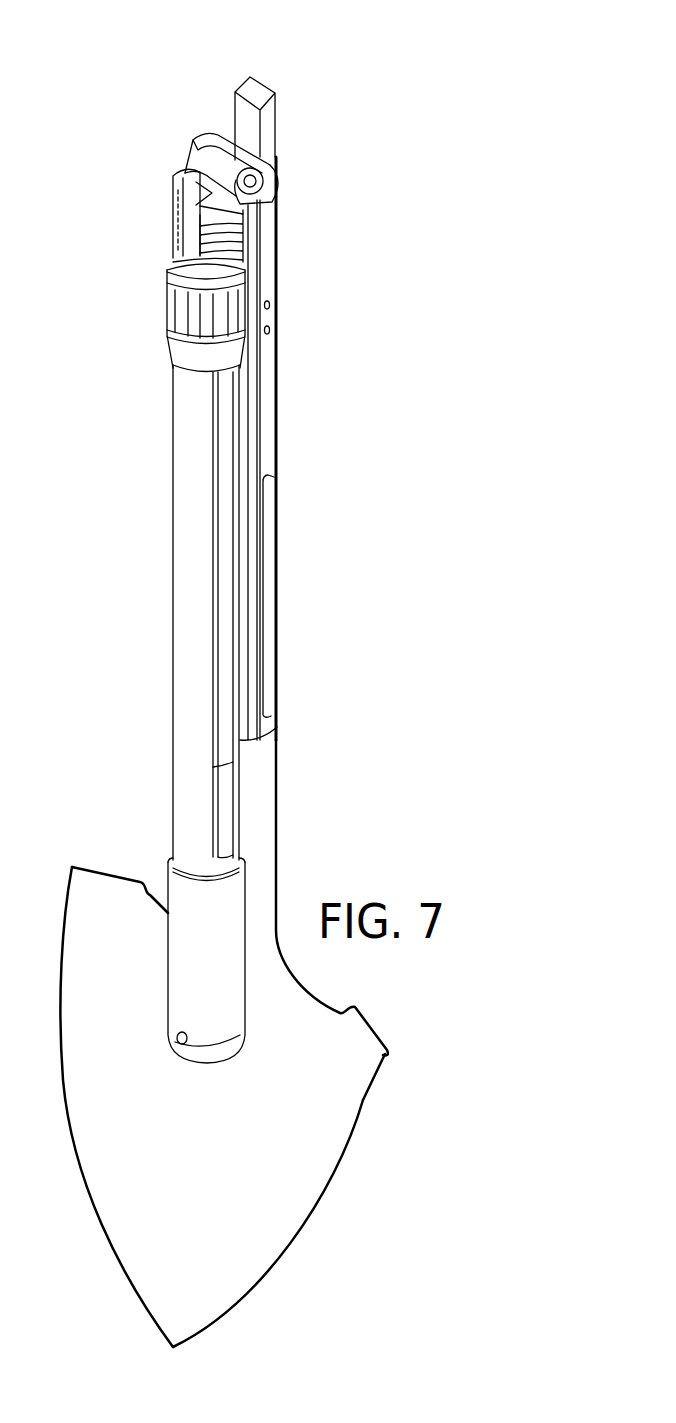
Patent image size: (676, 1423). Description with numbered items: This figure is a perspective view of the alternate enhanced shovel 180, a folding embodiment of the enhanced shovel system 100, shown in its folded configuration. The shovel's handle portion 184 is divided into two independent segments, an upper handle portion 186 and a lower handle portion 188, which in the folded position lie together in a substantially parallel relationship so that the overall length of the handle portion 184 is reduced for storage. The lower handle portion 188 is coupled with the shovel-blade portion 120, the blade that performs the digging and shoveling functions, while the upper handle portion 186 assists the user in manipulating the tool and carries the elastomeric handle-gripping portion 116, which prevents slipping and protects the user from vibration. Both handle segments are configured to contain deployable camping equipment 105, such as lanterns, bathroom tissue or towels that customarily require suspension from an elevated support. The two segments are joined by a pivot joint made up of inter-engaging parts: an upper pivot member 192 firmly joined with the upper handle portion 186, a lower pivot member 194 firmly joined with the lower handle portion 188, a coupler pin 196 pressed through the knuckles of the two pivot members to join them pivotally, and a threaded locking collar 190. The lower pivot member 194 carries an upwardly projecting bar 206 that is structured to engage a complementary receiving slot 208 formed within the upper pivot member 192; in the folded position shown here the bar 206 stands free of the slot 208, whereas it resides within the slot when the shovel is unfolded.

The enhanced shovel system 100 is at (170, 72).
The alternate enhanced shovel 180 is at (128, 130).
The projecting bar 206 is at (268, 91).
The lower pivot member 194 is at (300, 168).
The coupler pin 196 is at (252, 181).
The receiving slot 208 is at (183, 190).
The upper pivot member 192 is at (145, 205).
The threaded locking collar 190 is at (172, 345).
The upper handle portion 186 is at (147, 512).
The lower handle portion 188 is at (302, 360).
The handle portion 184 is at (432, 394).
The camping equipment 105 is at (222, 527).
The handle-gripping portion 116 is at (176, 977).
The shovel-blade portion 120 is at (350, 1147).